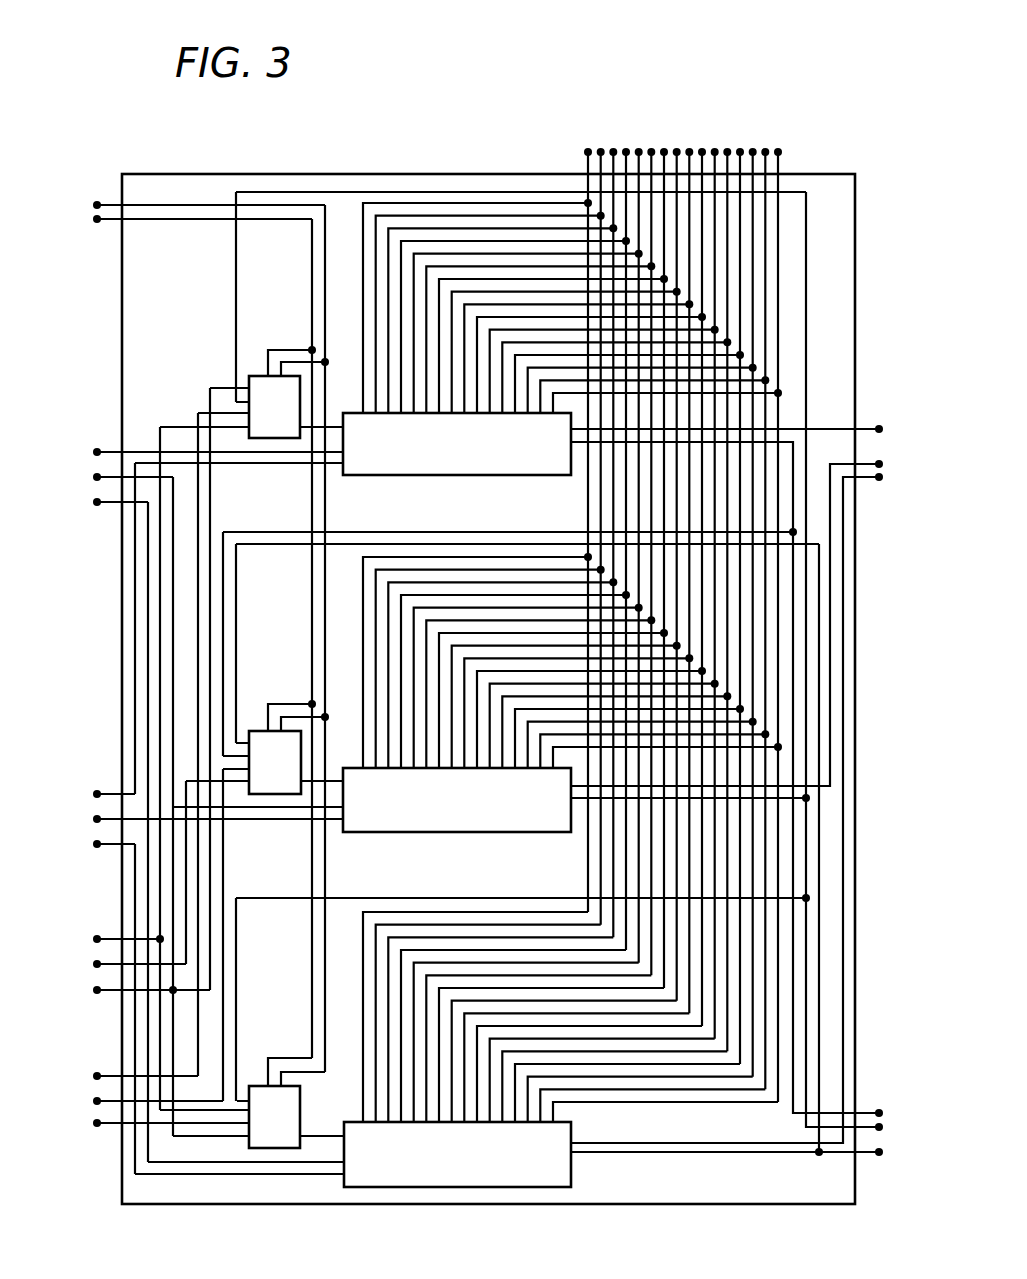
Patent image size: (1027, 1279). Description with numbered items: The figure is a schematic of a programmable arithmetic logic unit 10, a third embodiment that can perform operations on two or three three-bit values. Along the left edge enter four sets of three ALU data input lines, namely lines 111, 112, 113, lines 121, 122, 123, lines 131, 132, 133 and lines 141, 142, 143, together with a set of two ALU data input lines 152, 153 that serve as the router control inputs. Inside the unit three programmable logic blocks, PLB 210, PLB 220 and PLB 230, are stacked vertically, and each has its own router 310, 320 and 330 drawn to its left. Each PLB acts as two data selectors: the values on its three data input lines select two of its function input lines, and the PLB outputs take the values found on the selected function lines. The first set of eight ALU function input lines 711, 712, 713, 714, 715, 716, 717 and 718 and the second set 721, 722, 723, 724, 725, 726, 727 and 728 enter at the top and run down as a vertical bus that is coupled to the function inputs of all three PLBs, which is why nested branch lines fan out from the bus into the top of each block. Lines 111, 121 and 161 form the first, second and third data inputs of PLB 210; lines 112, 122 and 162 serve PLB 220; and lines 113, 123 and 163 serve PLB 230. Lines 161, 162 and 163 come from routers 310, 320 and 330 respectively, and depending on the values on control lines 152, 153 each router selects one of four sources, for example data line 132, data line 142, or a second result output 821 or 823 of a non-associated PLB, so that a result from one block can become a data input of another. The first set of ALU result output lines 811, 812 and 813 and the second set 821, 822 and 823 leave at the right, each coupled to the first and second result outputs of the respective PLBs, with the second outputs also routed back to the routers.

The programmable arithmetic logic unit 10 is at (198, 172).
The ALU data input line 152 is at (108, 204).
The input terminal 153 is at (108, 221).
The ALU data input line 111 is at (108, 450).
The ALU data input line 112 is at (109, 478).
The ALU data input line 113 is at (108, 504).
The ALU data input line 121 is at (108, 792).
The ALU data input line 122 is at (109, 820).
The ALU data input line 123 is at (108, 846).
The ALU data input line 131 is at (108, 937).
The ALU data input line 132 is at (109, 965).
The ALU data input line 133 is at (108, 992).
The ALU data input line 141 is at (108, 1074).
The ALU data input line 142 is at (109, 1102).
The ALU data input line 143 is at (108, 1125).
The third PLB data input line 161 is at (333, 429).
The third PLB data input line 162 is at (333, 783).
The third PLB data input line 163 is at (323, 1138).
The PLB 210 is at (476, 452).
The PLB 220 is at (476, 808).
The PLB 230 is at (476, 1164).
The router 310 is at (293, 418).
The router 320 is at (293, 773).
The router 330 is at (293, 1128).
The ALU function input line 711 is at (586, 152).
The ALU function input line 712 is at (600, 150).
The ALU function input line 713 is at (613, 150).
The ALU function input line 714 is at (626, 150).
The ALU function input line 715 is at (639, 150).
The ALU function input line 716 is at (651, 150).
The ALU function input line 717 is at (664, 150).
The ALU function input line 718 is at (677, 150).
The ALU function input line 721 is at (689, 150).
The ALU function input line 722 is at (702, 150).
The ALU function input line 723 is at (715, 150).
The ALU function input line 724 is at (727, 150).
The ALU function input line 725 is at (740, 150).
The ALU function input line 726 is at (753, 150).
The ALU function input line 727 is at (766, 150).
The ALU function input line 728 is at (780, 152).
The ALU output line 811 is at (866, 427).
The ALU output line 812 is at (866, 465).
The ALU output line 813 is at (866, 479).
The ALU output line 821 is at (866, 1111).
The ALU output line 822 is at (866, 1129).
The ALU output line 823 is at (866, 1154).